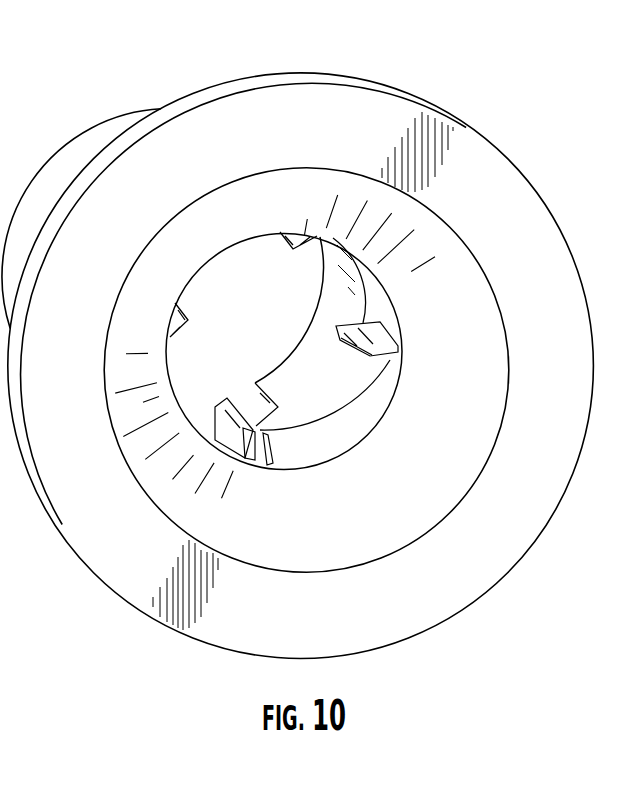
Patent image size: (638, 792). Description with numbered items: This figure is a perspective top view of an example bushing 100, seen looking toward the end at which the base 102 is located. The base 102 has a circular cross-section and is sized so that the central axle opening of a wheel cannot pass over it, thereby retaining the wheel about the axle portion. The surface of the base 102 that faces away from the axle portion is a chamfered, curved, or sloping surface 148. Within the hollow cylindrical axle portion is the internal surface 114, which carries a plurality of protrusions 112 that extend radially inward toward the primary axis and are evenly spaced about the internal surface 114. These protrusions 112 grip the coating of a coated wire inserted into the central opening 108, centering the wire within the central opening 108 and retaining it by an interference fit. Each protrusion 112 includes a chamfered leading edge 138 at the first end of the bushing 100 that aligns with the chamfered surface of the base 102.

The bushing 100 is at (489, 71).
The base 102 is at (127, 563).
The central opening 108 is at (290, 303).
The protrusions 112 is at (250, 428).
The internal surface 114 is at (328, 413).
The chamfered leading edge 138 is at (262, 463).
The sloping surface 148 is at (248, 547).